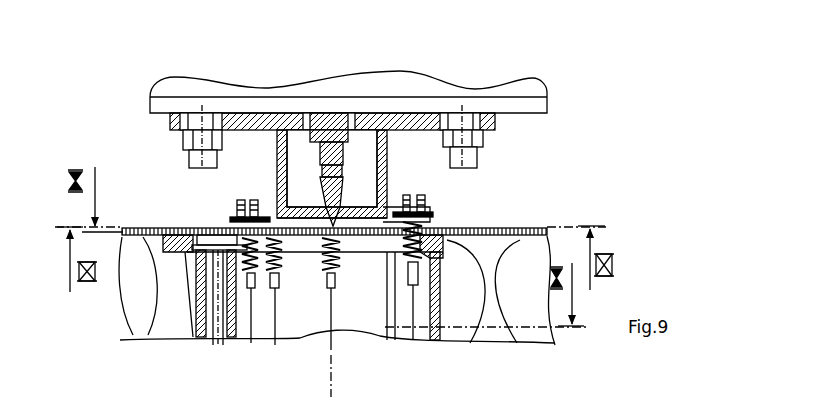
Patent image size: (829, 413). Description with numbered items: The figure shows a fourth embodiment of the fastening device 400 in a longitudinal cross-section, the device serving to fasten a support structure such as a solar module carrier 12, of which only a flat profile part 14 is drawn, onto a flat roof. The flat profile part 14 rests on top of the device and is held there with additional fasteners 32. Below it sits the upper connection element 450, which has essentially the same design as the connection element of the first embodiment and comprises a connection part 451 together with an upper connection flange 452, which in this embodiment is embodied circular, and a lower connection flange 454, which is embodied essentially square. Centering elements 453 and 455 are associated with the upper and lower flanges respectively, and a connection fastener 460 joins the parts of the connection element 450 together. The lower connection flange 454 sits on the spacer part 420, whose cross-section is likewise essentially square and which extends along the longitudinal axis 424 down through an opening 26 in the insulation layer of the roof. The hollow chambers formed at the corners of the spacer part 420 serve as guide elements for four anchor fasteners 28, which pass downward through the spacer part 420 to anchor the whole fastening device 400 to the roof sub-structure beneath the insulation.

The solar module carrier 12 is at (478, 63).
The flat profile part 14 is at (493, 123).
The additional fastener 32 is at (240, 200).
The opening 26 is at (203, 252).
The anchor fastener 28 is at (203, 340).
The fastening device 400 is at (492, 188).
The spacer part 420 is at (441, 341).
The longitudinal axis 424 is at (340, 245).
The upper connection element 450 is at (250, 172).
The connection part 451 is at (388, 165).
The upper connection flange 452 is at (228, 218).
The centering element 453 is at (330, 226).
The lower connection flange 454 is at (443, 235).
The centering element 455 is at (350, 243).
The connection fastener 460 is at (330, 117).